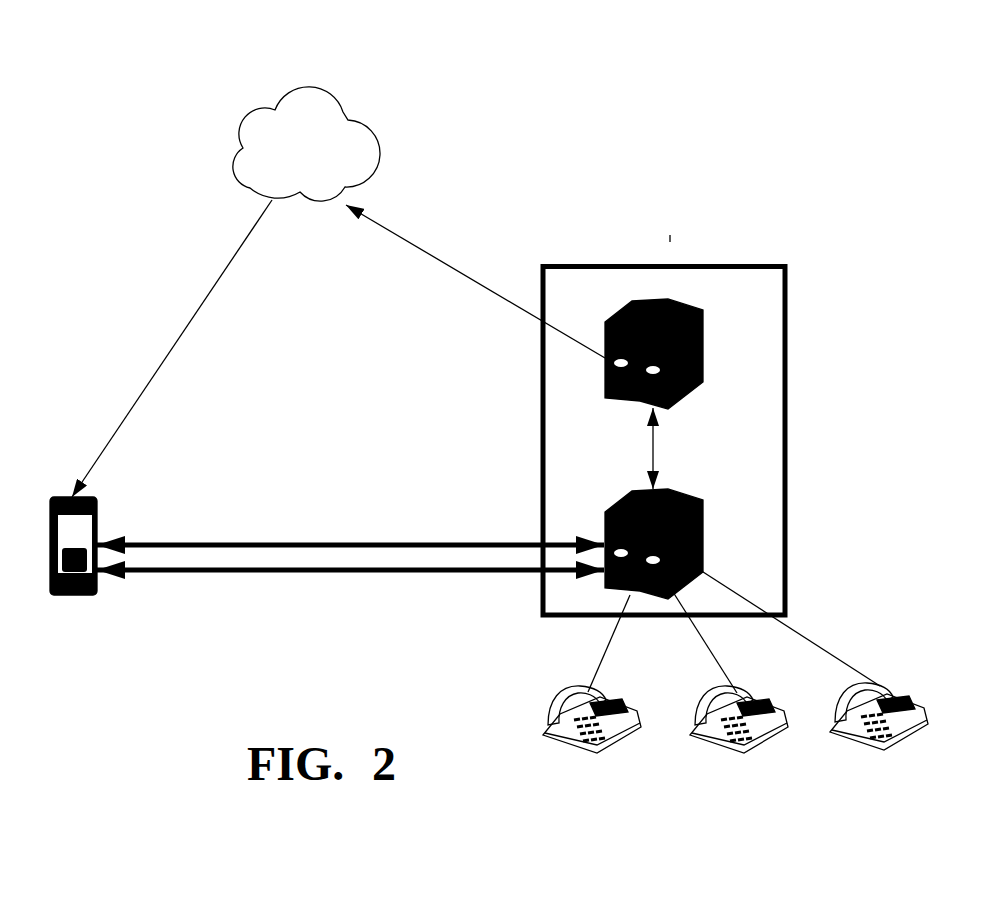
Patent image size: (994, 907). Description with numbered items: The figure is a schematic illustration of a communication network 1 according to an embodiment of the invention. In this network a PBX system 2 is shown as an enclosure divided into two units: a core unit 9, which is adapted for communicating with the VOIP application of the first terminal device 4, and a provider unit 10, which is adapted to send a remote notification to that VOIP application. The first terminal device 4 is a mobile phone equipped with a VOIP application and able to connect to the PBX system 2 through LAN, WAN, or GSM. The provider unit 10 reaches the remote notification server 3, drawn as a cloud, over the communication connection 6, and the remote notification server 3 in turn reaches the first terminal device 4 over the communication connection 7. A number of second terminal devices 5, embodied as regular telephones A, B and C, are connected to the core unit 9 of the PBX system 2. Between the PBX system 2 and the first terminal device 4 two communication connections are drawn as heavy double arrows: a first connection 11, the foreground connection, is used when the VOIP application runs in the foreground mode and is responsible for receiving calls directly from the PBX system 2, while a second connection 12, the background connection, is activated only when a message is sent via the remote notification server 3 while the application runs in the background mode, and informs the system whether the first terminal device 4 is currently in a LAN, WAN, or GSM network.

The communication network 1 is at (668, 120).
The PBX system 2 is at (775, 261).
The remote notification server 3 is at (343, 95).
The first terminal device 4 is at (58, 491).
The second terminal devices 5 is at (632, 692).
The communication connection 6 is at (438, 248).
The communication connection 7 is at (187, 327).
The core unit 9 is at (714, 508).
The provider unit 10 is at (722, 347).
The first connection 11 is at (197, 577).
The second connection 12 is at (462, 549).